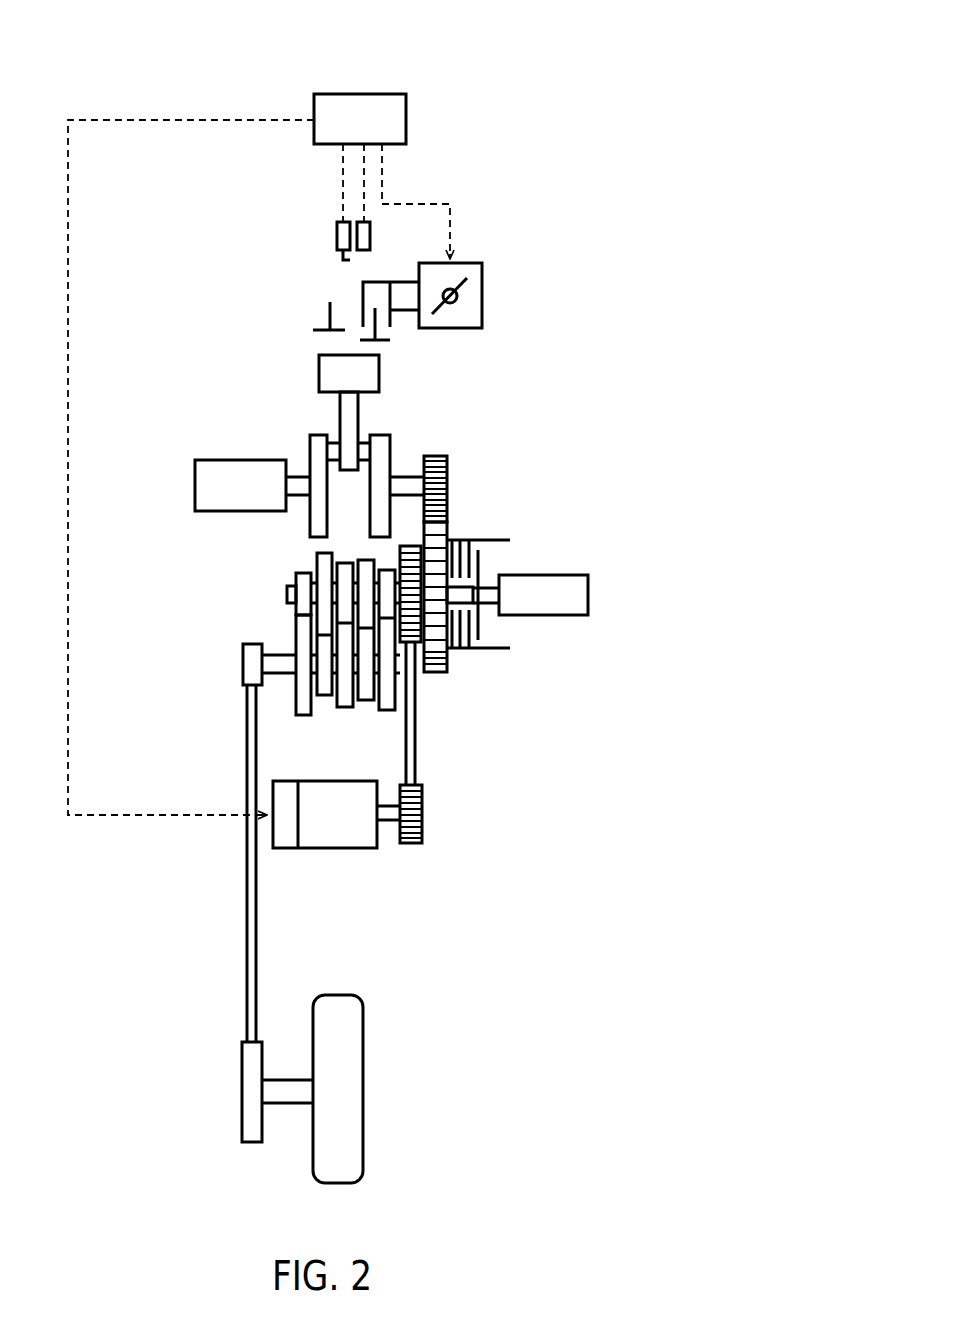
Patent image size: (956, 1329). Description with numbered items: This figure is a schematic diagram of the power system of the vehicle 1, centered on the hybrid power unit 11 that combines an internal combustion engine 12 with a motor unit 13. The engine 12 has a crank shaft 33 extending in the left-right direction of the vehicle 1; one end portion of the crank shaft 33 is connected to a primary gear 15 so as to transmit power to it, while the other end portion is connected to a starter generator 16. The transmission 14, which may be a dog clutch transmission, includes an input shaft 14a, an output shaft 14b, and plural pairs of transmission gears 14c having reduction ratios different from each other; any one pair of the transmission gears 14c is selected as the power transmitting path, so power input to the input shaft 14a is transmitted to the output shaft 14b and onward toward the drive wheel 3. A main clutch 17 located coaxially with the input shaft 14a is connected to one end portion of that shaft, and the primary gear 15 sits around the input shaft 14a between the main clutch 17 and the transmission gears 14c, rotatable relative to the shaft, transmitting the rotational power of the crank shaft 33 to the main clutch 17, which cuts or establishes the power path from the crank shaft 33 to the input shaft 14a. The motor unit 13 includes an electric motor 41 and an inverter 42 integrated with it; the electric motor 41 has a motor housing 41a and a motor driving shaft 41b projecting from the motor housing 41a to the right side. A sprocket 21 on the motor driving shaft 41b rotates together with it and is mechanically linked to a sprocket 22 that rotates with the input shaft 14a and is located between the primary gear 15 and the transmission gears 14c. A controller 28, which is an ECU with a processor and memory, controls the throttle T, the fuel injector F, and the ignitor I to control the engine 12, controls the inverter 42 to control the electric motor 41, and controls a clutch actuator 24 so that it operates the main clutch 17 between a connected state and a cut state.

The vehicle 1 is at (596, 174).
The drive wheel 3 is at (350, 1148).
The hybrid power unit 11 is at (209, 226).
The internal combustion engine 12 is at (279, 356).
The motor unit 13 is at (265, 910).
The transmission 14 is at (254, 567).
The input shaft 14a is at (287, 594).
The output shaft 14b is at (272, 663).
The transmission gears 14c is at (295, 625).
The primary gear 15 is at (447, 660).
The starter generator 16 is at (226, 460).
The main clutch 17 is at (477, 540).
The sprocket 21 is at (412, 843).
The sprocket 22 is at (410, 546).
The clutch actuator 24 is at (588, 595).
The controller 28 is at (363, 94).
The crank shaft 33 is at (408, 483).
The electric motor 41 is at (341, 848).
The motor housing 41a is at (318, 781).
The motor driving shaft 41b is at (393, 803).
The inverter 42 is at (287, 848).
The ignitor I is at (337, 236).
The fuel injector F is at (370, 237).
The throttle T is at (455, 328).